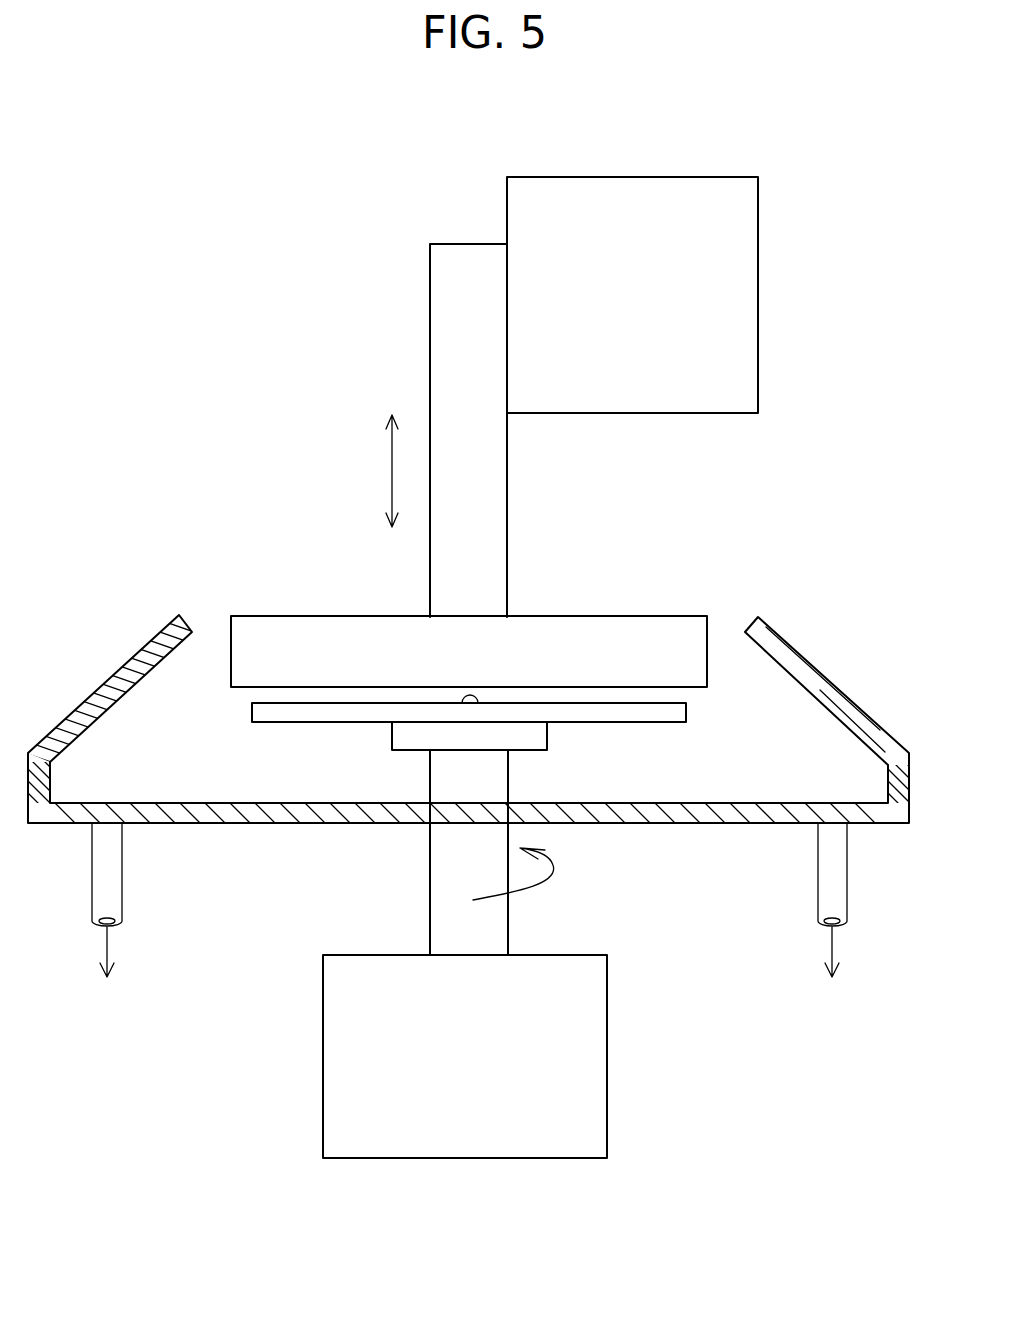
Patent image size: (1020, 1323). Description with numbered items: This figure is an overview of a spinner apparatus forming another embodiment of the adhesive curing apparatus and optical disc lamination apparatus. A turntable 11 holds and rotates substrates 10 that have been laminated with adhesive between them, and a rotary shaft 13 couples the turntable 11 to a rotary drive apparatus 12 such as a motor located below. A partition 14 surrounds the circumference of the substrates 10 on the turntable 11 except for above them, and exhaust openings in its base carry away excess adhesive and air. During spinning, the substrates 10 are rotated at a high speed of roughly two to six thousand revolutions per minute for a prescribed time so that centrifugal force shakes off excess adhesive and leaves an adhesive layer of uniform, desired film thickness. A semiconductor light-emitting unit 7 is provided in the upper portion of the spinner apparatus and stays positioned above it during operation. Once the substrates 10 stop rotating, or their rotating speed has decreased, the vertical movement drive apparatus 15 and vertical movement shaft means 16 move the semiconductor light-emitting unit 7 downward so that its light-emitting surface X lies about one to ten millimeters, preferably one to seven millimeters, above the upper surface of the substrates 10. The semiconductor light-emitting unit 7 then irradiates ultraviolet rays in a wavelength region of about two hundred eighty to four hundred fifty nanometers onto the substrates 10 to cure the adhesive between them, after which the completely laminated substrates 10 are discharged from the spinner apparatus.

The semiconductor light-emitting unit 7 is at (650, 630).
The substrates 10 is at (653, 718).
The turntable 11 is at (405, 743).
The rotary drive apparatus 12 is at (587, 1047).
The rotary shaft 13 is at (453, 927).
The partition 14 is at (807, 662).
The vertical movement drive apparatus 15 is at (733, 302).
The vertical movement shaft means 16 is at (448, 318).
The light-emitting surface X is at (247, 690).